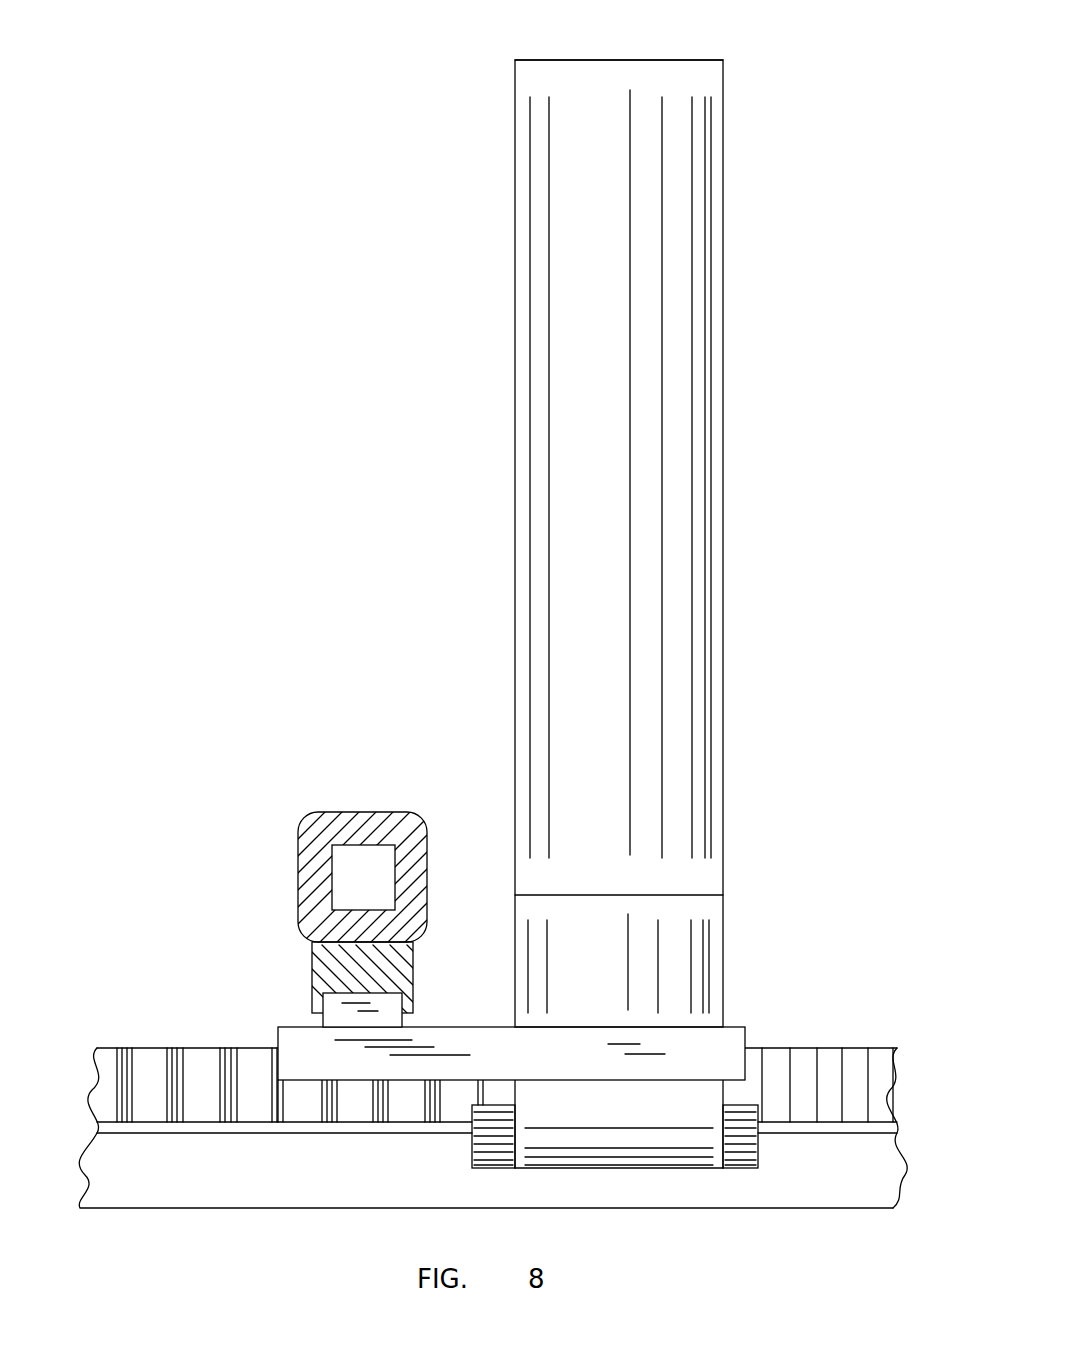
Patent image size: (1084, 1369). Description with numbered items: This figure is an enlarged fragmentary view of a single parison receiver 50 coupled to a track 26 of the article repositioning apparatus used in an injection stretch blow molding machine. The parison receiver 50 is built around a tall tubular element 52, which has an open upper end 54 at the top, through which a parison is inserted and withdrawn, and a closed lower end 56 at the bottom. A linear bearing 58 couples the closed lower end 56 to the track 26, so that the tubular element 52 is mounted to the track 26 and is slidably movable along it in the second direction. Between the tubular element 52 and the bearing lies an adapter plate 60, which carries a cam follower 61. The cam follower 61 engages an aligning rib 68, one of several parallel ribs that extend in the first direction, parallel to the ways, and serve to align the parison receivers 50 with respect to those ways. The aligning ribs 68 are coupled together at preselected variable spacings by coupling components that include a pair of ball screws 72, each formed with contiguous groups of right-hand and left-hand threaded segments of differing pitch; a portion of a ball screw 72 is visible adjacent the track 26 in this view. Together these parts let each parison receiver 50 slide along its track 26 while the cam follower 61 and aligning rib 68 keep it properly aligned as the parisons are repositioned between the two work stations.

The track 26 is at (845, 1172).
The parison receiver 50 is at (623, 514).
The tubular element 52 is at (575, 463).
The open upper end 54 is at (597, 60).
The closed lower end 56 is at (690, 913).
The linear bearing 58 is at (628, 1120).
The adapter plate 60 is at (722, 1043).
The cam follower 61 is at (338, 1020).
The aligning rib 68 is at (315, 943).
The ball screw 72 is at (830, 1070).